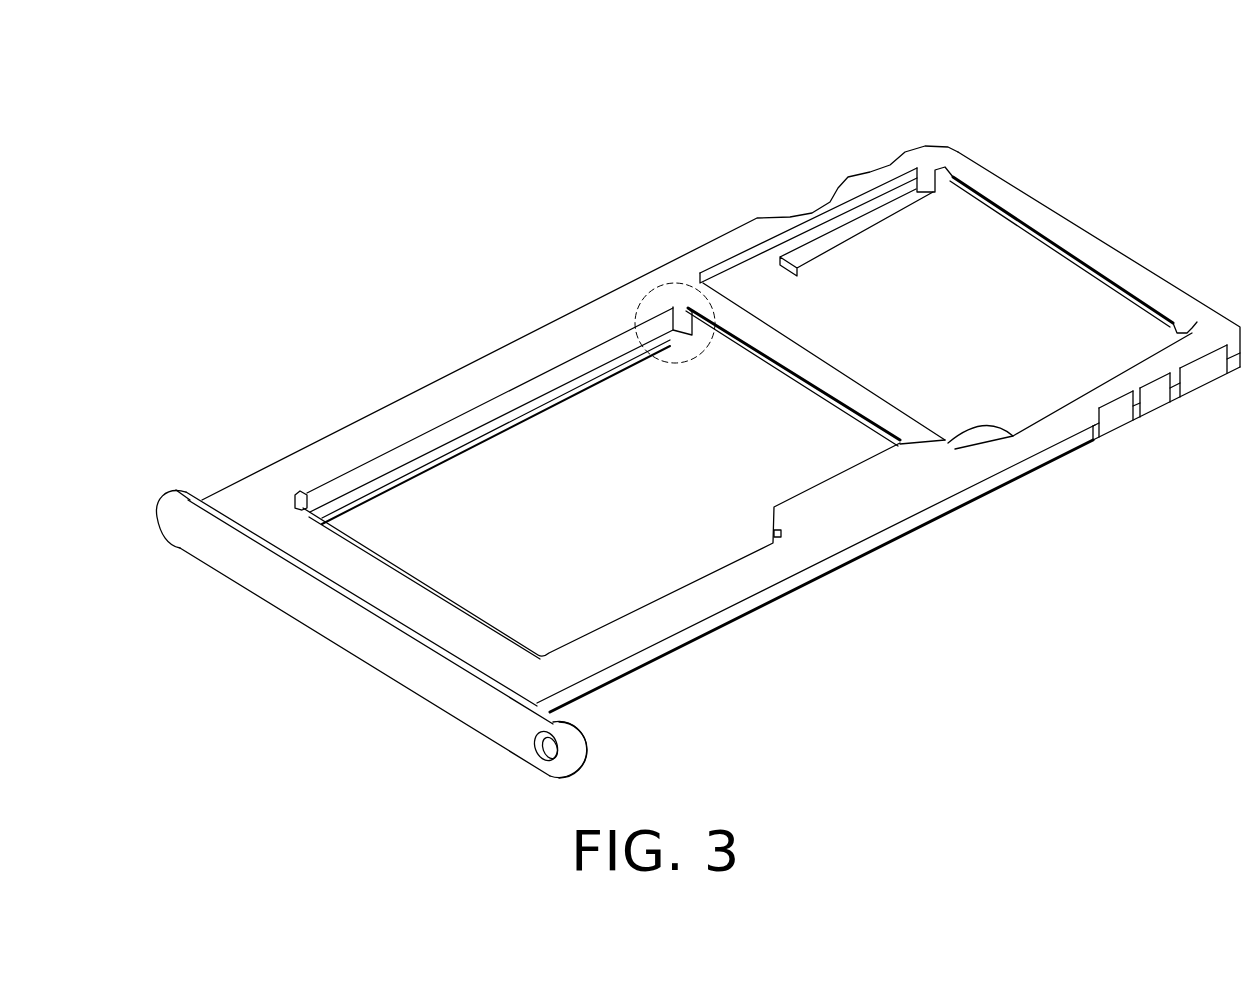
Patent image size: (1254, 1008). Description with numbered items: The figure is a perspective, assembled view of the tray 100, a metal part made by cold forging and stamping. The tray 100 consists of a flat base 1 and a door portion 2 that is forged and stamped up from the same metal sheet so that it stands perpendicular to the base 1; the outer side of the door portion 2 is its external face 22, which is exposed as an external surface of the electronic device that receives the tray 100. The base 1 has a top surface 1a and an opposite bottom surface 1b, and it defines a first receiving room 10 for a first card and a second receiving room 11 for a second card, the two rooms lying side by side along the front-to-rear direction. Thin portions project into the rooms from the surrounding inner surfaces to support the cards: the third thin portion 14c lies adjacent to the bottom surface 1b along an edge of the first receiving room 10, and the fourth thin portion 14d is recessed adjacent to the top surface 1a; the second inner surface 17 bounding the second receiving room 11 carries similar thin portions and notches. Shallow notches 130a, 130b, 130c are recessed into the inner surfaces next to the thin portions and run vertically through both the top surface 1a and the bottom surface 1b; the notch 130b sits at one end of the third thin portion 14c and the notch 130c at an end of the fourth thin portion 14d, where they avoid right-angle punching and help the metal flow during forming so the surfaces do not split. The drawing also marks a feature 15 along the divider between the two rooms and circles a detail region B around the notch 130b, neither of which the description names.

The tray 100 is at (423, 335).
The base 1 is at (262, 505).
The top surface 1a is at (413, 410).
The bottom surface 1b is at (606, 690).
The door portion 2 is at (190, 522).
The external face 22 is at (462, 698).
The first receiving room 10 is at (560, 433).
The second receiving room 11 is at (960, 237).
The third thin portion 14c is at (622, 337).
The fourth thin portion 14d is at (1038, 234).
The partition wall 15 is at (655, 300).
The second inner surface 17 is at (835, 238).
The shallow notch 130a is at (782, 534).
The shallow notch 130b is at (680, 313).
The shallow notch 130c is at (949, 168).
The detail region B is at (700, 365).